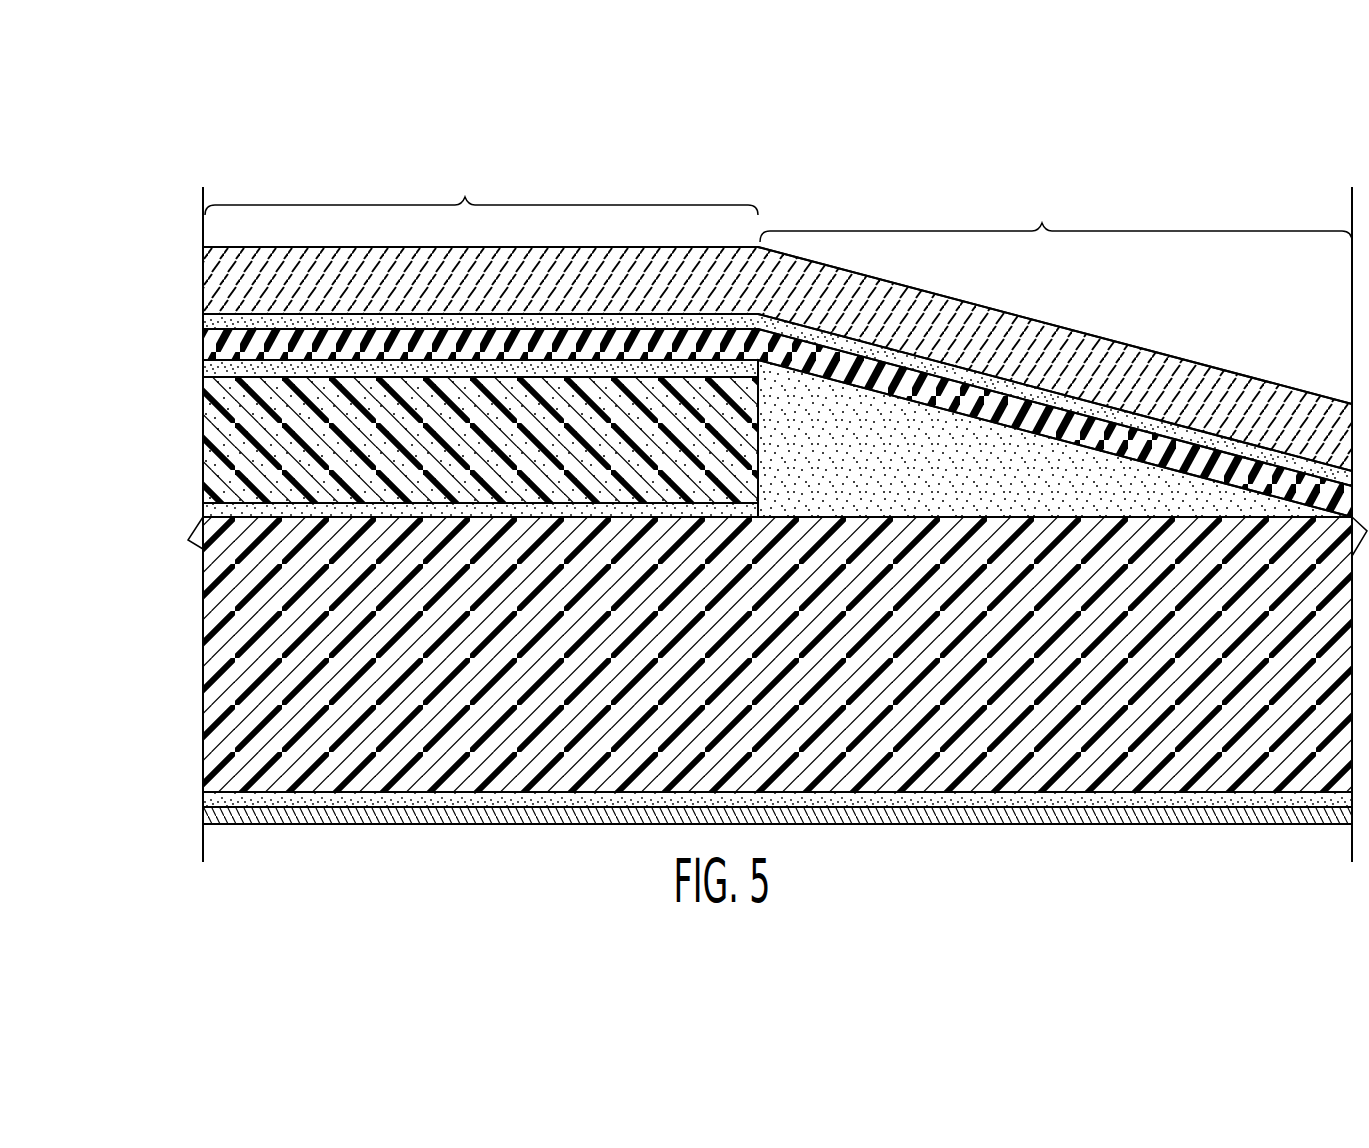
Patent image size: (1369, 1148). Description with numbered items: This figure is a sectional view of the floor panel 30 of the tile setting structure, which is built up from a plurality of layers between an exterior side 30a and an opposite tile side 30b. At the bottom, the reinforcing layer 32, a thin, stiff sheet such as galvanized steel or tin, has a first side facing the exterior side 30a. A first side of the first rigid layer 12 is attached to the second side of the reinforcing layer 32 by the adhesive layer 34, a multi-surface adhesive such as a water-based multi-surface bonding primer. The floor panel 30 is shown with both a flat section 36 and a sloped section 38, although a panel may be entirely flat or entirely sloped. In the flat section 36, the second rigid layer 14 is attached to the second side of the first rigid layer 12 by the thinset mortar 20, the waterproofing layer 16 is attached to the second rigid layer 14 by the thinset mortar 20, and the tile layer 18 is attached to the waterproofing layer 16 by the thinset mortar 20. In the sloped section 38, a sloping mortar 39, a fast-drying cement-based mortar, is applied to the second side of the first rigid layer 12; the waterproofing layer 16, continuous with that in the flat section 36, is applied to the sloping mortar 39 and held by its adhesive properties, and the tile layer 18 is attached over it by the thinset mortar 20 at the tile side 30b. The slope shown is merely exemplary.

The floor panel 30 is at (192, 128).
The exterior side 30a is at (497, 843).
The tile side 30b is at (778, 150).
The first rigid layer 12 is at (230, 650).
The second rigid layer 14 is at (213, 440).
The waterproofing layer 16 is at (223, 347).
The tile layer 18 is at (215, 280).
The thinset mortar 20 is at (215, 323).
The reinforcing layer 32 is at (207, 815).
The adhesive layer 34 is at (205, 800).
The flat section 36 is at (481, 190).
The sloped section 38 is at (1056, 216).
The sloping mortar 39 is at (1065, 475).